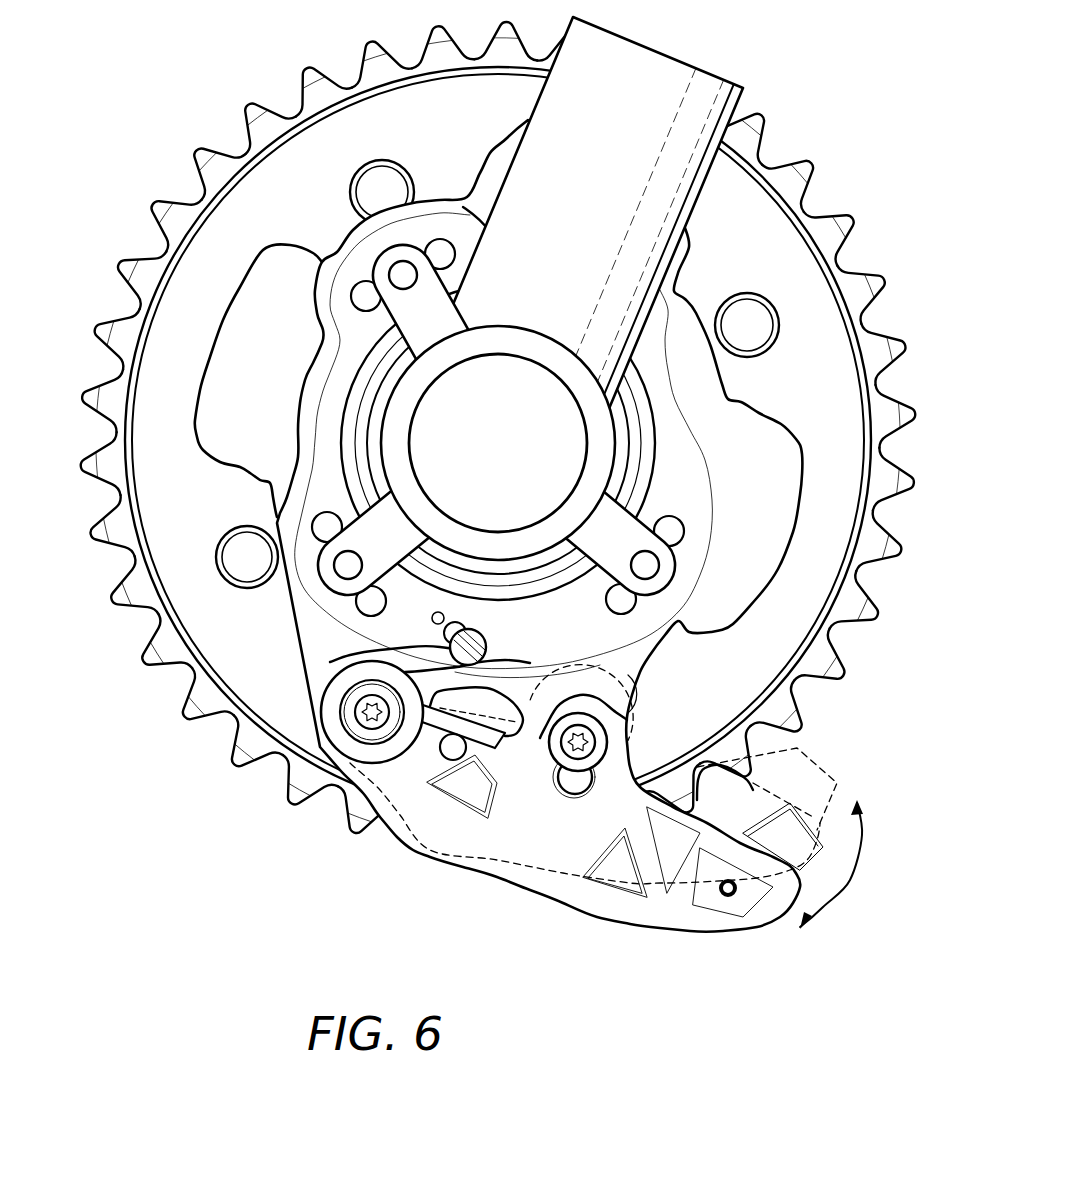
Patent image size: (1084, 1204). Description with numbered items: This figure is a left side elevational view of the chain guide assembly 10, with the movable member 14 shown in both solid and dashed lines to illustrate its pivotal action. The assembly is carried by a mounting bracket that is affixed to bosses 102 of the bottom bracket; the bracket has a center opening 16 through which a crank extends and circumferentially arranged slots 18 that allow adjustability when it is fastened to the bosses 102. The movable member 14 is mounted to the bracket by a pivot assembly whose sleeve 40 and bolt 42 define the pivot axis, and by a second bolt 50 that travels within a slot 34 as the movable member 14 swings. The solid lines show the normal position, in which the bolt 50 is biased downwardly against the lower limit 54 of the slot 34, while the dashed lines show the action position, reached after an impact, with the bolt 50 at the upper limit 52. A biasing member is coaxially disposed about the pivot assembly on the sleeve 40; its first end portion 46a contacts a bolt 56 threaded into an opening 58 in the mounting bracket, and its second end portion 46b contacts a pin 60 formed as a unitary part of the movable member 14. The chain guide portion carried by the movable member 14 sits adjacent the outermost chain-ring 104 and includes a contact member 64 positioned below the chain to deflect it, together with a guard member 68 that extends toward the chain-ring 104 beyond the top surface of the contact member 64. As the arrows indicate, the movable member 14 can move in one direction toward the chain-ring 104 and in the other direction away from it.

The chain guide assembly 10 is at (322, 930).
The movable member 14 is at (733, 928).
The center opening 16 is at (498, 453).
The slots 18 is at (327, 528).
The slot 34 is at (567, 777).
The sleeve 40 is at (315, 783).
The bolt 42 is at (372, 730).
The first end portion 46a is at (508, 640).
The second end portion 46b is at (480, 740).
The bolt 50 is at (705, 829).
The upper limit 52 is at (577, 793).
The lower limit 54 is at (645, 666).
The bolt 56 is at (450, 648).
The opening 58 is at (432, 618).
The pin 60 is at (453, 752).
The contact member 64 is at (783, 855).
The guard member 68 is at (787, 823).
The bosses 102 is at (285, 580).
The chain-ring 104 is at (827, 230).